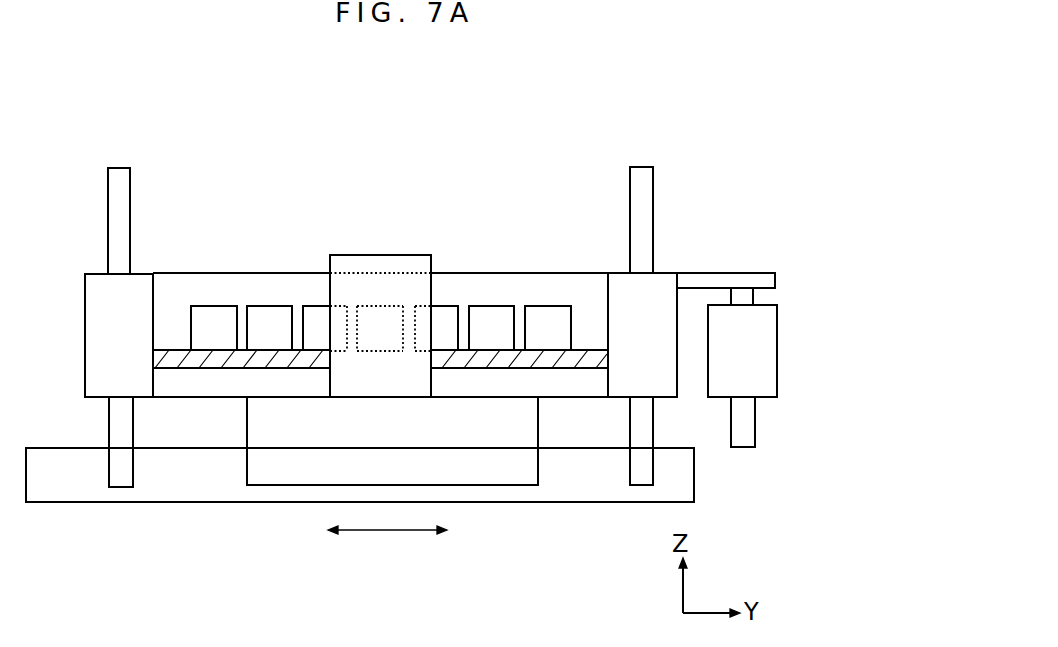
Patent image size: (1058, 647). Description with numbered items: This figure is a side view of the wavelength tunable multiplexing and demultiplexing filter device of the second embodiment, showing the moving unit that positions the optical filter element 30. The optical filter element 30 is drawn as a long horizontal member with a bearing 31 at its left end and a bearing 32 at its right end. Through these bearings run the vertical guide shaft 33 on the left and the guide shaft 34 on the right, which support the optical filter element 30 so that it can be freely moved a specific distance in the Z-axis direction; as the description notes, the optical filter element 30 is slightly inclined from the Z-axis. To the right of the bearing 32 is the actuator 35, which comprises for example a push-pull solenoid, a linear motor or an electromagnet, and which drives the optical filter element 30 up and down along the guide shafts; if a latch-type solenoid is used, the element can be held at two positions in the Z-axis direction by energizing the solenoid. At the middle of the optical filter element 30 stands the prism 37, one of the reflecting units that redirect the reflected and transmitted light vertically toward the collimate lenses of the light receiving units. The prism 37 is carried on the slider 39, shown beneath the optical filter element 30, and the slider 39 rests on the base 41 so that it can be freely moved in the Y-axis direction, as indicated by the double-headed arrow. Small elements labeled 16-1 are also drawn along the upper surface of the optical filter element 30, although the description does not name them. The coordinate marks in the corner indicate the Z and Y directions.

The chip / electronic component 16-1 is at (212, 306).
The optical filter element 30 is at (492, 273).
The bearing 31 is at (102, 273).
The bearing 32 is at (620, 273).
The guide shaft 33 is at (121, 168).
The guide shaft 34 is at (640, 167).
The actuator 35 is at (777, 350).
The prism 37 is at (380, 255).
The slider 39 is at (498, 485).
The base 41 is at (694, 485).